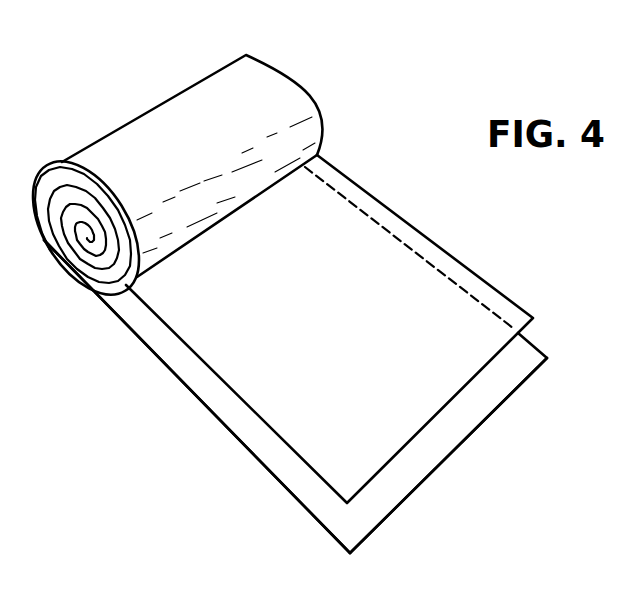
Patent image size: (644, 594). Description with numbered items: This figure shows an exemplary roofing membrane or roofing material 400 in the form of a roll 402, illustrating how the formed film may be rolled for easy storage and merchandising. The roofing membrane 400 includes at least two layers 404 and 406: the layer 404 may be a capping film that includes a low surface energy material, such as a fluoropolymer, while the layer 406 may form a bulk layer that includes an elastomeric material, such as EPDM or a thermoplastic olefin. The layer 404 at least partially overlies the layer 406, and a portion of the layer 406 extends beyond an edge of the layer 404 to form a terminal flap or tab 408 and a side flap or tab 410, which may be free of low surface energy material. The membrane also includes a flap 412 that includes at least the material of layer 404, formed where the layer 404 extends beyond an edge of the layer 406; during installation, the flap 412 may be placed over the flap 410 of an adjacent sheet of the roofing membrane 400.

The roofing membrane 400 is at (136, 59).
The roll 402 is at (312, 100).
The capping film layer 404 is at (448, 293).
The bulk layer 406 is at (517, 375).
The terminal flap 408 is at (428, 458).
The side flap 410 is at (215, 405).
The flap 412 is at (438, 268).